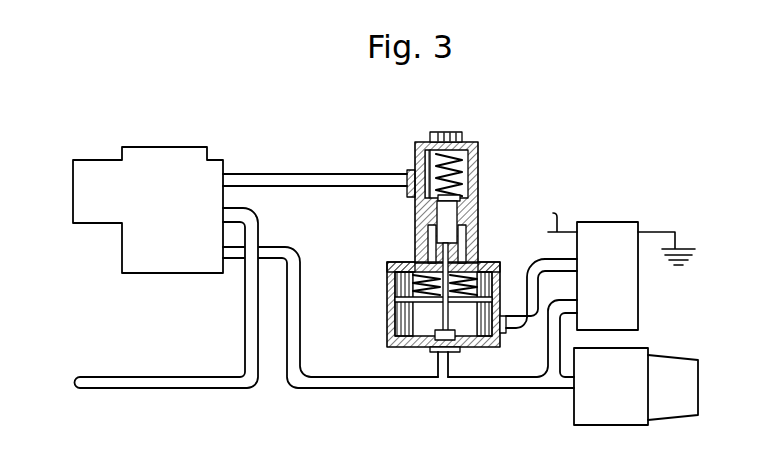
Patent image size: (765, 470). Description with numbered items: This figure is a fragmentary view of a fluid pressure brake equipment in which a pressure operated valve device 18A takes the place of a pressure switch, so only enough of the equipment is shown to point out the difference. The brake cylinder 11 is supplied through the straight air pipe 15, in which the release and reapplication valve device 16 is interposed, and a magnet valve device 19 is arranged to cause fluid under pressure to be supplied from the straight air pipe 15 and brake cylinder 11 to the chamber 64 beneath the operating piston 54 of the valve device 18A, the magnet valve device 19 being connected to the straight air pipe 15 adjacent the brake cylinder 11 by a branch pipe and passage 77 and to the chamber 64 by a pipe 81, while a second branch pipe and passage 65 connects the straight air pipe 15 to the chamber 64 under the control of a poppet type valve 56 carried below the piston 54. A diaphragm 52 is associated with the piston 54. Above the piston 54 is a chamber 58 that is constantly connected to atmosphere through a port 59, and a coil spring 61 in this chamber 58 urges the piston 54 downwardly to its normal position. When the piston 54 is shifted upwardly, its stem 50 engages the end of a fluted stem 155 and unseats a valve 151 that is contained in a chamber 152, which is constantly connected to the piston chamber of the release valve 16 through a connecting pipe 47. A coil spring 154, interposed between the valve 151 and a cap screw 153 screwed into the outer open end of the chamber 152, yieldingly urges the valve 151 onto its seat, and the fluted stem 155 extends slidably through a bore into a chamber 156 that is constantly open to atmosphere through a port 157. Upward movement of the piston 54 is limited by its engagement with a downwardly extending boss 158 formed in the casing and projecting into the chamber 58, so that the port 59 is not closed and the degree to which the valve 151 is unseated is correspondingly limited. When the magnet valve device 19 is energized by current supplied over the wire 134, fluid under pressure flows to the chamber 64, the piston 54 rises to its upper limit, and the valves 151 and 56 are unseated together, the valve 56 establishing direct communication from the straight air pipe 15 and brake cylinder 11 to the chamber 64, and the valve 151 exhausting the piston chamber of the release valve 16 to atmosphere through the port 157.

The brake cylinder 11 is at (646, 350).
The straight air pipe 15 is at (100, 371).
The release and reapplication valve device 16 is at (140, 146).
The magnet valve device 19 is at (609, 222).
The connecting pipe 47 is at (275, 181).
The pressure operated valve device 18A is at (448, 193).
The stem 50 is at (497, 271).
The diaphragm 52 is at (444, 311).
The piston 54 is at (436, 310).
The valve 56 is at (449, 334).
The chamber 58 is at (390, 292).
The port 59 is at (495, 286).
The coil spring 61 is at (415, 258).
The chamber 64 is at (427, 362).
The branch pipe and passage 65 is at (447, 363).
The branch pipe and passage 77 is at (550, 364).
The pipe 81 is at (536, 281).
The wire 134 is at (558, 213).
The valve 151 is at (472, 198).
The chamber 152 is at (472, 186).
The cap screw 153 is at (462, 137).
The coil spring 154 is at (418, 172).
The fluted stem 155 is at (470, 219).
The chamber 156 is at (420, 226).
The port 157 is at (468, 243).
The boss 158 is at (390, 268).